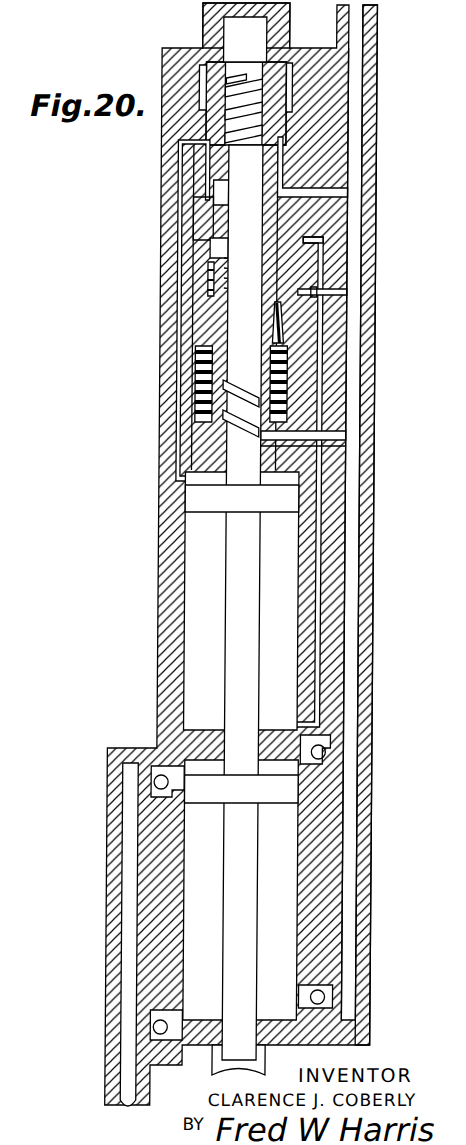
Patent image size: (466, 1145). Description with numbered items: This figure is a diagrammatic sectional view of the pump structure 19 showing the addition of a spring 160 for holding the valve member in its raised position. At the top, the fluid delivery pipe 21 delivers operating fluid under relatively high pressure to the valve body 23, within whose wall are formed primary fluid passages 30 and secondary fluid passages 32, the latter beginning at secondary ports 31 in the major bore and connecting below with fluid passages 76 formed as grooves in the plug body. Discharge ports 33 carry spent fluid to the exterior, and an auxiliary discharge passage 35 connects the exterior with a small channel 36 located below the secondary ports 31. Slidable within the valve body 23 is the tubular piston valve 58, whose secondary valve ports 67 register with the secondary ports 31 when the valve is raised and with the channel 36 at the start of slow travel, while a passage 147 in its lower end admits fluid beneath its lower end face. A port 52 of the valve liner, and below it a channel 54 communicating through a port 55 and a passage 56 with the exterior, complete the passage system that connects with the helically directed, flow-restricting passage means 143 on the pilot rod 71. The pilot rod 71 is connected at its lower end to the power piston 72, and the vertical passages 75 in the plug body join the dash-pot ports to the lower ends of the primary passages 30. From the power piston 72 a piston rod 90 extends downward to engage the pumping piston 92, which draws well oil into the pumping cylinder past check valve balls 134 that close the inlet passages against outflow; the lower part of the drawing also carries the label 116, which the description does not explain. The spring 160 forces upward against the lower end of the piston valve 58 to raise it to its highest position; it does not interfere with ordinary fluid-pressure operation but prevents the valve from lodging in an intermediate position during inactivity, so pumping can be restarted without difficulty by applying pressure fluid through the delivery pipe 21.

The pump structure 19 is at (150, 326).
The fluid delivery pipe 21 is at (226, 12).
The valve body 23 is at (334, 162).
The primary fluid passages 30 is at (182, 202).
The secondary ports 31 is at (322, 231).
The secondary fluid passages 32 is at (322, 272).
The discharge ports 33 is at (338, 193).
The auxiliary discharge passage 35 is at (329, 292).
The channel 36 is at (194, 290).
The port 52 is at (228, 388).
The channel 54 is at (263, 440).
The port 55 is at (293, 442).
The passage 56 is at (340, 435).
The piston valve 58 is at (209, 222).
The secondary valve ports 67 is at (204, 243).
The pilot rod 71 is at (239, 180).
The power piston 72 is at (206, 497).
The vertical passages 75 is at (181, 410).
The fluid passages 76 is at (322, 553).
The piston rod 90 is at (243, 632).
The pumping piston 92 is at (208, 782).
The rod 116 is at (255, 890).
The check valve balls 134 is at (346, 730).
The passage means 143 is at (260, 432).
The passage 147 is at (280, 338).
The spring 160 is at (283, 383).